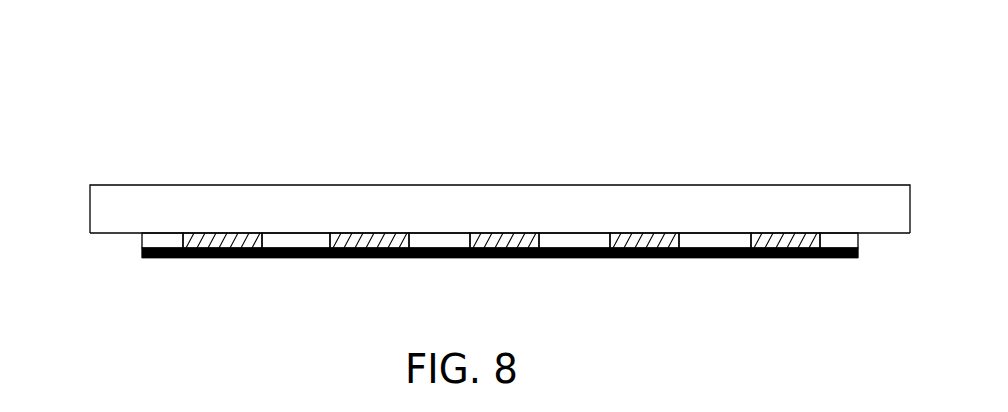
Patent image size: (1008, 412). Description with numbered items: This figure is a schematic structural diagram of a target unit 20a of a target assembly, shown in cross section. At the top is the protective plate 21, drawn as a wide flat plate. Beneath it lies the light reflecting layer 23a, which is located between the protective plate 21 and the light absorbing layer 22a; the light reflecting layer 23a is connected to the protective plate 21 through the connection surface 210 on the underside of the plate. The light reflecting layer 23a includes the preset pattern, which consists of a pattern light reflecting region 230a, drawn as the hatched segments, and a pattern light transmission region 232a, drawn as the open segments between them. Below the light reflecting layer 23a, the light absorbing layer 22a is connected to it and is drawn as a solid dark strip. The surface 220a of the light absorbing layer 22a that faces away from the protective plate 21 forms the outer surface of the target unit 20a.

The target unit 20a is at (552, 92).
The protective plate 21 is at (622, 202).
The connection surface 210 is at (122, 233).
The light reflecting layer 23a is at (355, 103).
The pattern light reflecting region 230a is at (198, 240).
The pattern light transmission region 232a is at (300, 240).
The light absorbing layer 22a is at (655, 258).
The surface of the light absorbing layer 220a is at (515, 258).